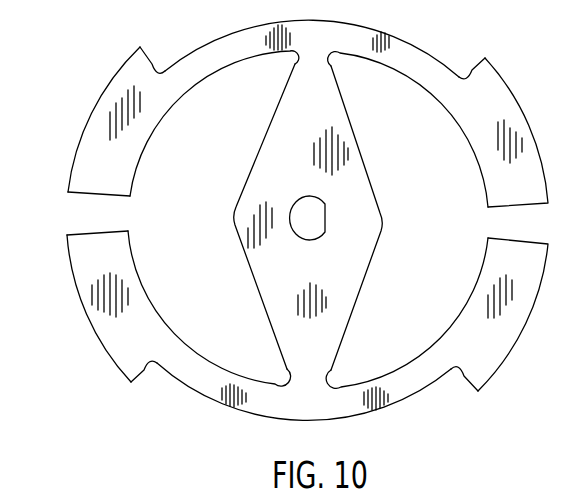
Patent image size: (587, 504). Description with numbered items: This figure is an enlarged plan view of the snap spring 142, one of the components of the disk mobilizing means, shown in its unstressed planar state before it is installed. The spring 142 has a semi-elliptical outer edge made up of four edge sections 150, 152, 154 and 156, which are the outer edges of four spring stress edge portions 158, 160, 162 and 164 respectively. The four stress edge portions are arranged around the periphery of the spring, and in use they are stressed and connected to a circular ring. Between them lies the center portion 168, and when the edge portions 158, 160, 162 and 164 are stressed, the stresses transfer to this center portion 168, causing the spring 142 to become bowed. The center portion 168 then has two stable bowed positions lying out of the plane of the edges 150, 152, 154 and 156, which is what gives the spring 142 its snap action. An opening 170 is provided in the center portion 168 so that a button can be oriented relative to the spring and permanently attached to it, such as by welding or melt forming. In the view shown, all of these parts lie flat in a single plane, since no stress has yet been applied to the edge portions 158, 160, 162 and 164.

The snap spring 142 is at (489, 342).
The edge section 150 is at (512, 93).
The edge section 152 is at (523, 328).
The edge section 154 is at (96, 336).
The edge section 156 is at (92, 106).
The spring stress edge portion 158 is at (489, 77).
The spring stress edge portion 160 is at (480, 366).
The spring stress edge portion 162 is at (123, 357).
The spring stress edge portion 164 is at (90, 158).
The center portion 168 is at (336, 313).
The opening 170 is at (322, 228).